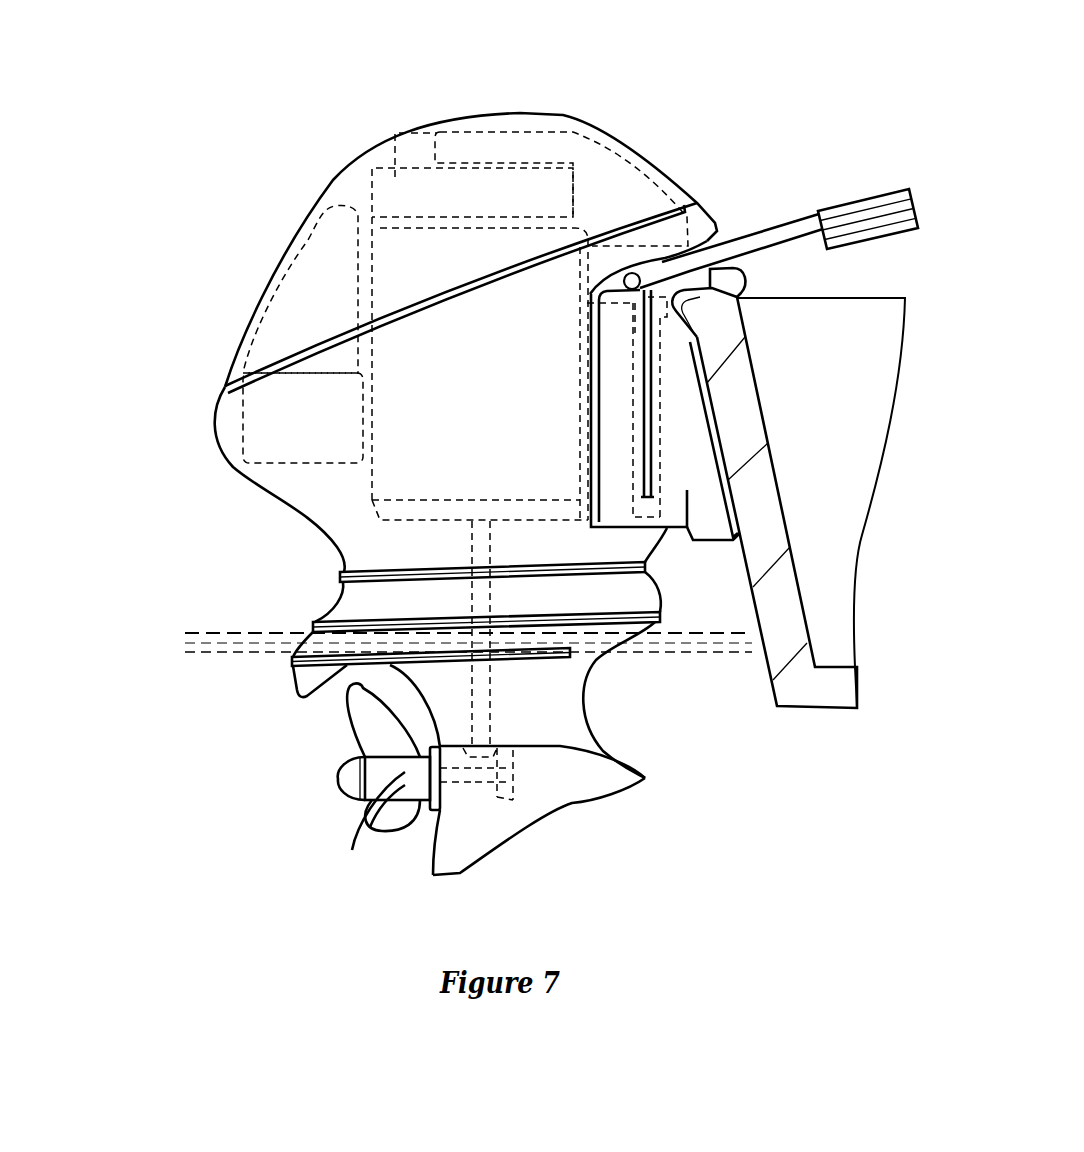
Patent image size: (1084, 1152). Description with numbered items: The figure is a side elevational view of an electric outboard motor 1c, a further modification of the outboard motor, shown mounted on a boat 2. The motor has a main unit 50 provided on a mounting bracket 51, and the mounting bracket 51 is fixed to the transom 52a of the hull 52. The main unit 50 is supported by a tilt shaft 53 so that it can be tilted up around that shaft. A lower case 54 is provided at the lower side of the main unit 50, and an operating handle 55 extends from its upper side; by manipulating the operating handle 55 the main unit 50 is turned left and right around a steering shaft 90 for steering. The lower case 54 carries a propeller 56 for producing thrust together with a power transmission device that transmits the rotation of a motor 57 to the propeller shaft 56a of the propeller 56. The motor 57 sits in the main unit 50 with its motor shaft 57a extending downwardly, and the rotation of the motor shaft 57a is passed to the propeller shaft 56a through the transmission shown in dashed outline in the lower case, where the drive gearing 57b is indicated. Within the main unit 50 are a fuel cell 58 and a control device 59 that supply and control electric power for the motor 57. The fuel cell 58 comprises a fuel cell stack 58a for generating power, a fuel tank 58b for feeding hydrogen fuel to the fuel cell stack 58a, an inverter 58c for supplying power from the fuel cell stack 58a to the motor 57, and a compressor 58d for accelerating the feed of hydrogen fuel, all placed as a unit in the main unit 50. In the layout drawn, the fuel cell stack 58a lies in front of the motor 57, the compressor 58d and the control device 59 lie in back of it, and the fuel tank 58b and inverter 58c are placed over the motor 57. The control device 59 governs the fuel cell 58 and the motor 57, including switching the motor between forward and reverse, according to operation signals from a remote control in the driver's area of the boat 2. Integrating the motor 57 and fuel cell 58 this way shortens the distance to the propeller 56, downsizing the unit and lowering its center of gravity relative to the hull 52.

The electric outboard motor 1c is at (676, 31).
The boat 2 is at (832, 288).
The main unit 50 is at (272, 489).
The mounting bracket 51 is at (687, 413).
The hull 52 is at (808, 707).
The transom 52a is at (763, 472).
The tilt shaft 53 is at (630, 290).
The lower case 54 is at (572, 690).
The operating handle 55 is at (749, 240).
The propeller 56 is at (370, 712).
The propeller shaft 56a is at (463, 781).
The motor 57 is at (357, 197).
The motor shaft 57a is at (488, 597).
The gear 57b is at (518, 784).
The fuel cell 58 is at (628, 532).
The fuel cell stack 58a is at (630, 367).
The fuel tank 58b is at (395, 138).
The inverter 58c is at (497, 132).
The compressor 58d is at (300, 268).
The control device 59 is at (258, 447).
The steering shaft 90 is at (612, 390).